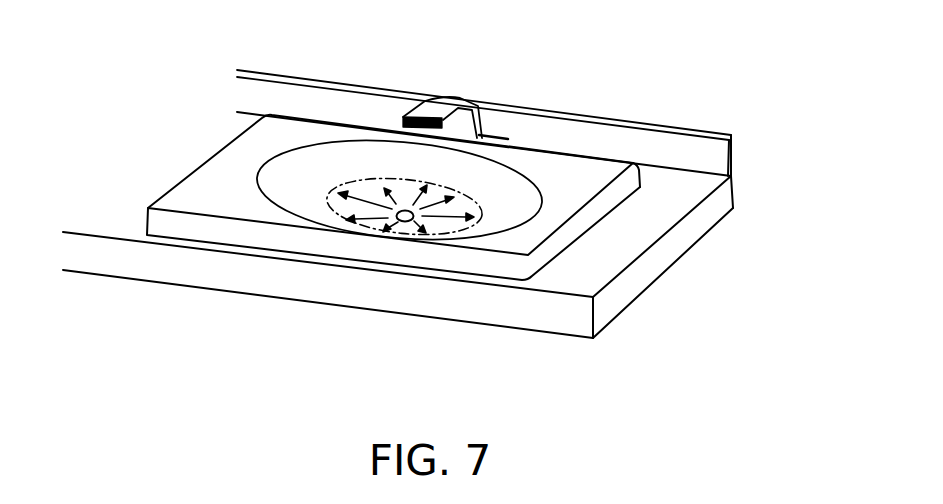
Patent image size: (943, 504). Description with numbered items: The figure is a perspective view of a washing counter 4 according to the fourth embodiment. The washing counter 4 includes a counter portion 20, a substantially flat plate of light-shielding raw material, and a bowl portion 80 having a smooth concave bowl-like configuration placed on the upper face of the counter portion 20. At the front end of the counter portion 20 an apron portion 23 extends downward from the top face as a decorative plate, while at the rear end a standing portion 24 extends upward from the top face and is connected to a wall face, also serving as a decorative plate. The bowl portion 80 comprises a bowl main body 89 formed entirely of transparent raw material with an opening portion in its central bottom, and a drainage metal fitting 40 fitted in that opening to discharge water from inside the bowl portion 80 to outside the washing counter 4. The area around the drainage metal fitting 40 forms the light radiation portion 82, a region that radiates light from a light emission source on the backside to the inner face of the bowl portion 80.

The washing counter 4 is at (660, 96).
The counter portion 20 is at (162, 157).
The apron portion 23 is at (404, 292).
The standing portion 24 is at (731, 147).
The bowl main body 89 is at (237, 167).
The bowl portion 80 is at (338, 161).
The drainage metal fitting 40 is at (404, 199).
The light radiation portion 82 is at (468, 193).